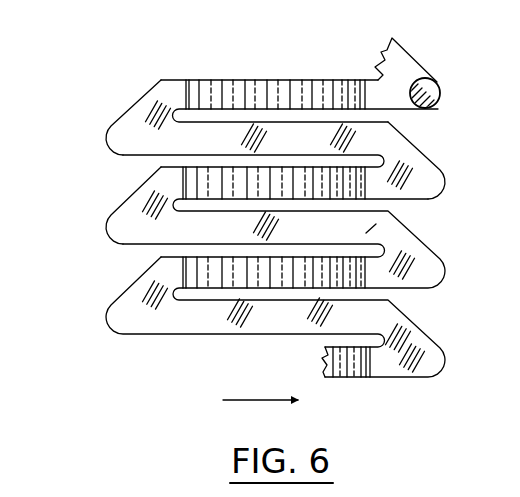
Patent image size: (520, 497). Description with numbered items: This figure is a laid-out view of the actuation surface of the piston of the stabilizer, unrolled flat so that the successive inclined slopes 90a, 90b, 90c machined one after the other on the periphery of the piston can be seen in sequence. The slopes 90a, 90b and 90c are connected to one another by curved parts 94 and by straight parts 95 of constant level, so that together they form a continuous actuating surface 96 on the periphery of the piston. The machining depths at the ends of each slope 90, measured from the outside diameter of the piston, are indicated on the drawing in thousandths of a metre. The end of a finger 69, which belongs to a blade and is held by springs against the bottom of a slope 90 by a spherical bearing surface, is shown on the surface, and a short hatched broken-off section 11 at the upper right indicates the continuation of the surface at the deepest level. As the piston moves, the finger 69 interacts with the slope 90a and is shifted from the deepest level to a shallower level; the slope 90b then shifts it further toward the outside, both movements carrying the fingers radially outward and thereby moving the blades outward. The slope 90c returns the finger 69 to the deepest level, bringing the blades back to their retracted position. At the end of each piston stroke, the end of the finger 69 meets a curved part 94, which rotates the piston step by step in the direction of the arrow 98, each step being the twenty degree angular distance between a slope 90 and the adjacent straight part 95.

The strip end portion 11 is at (382, 97).
The finger 69 is at (438, 80).
The slope 90 is at (226, 140).
The first inclined slope 90a is at (275, 65).
The second inclined slope 90b is at (277, 173).
The third inclined slope 90c is at (287, 256).
The curved part 94 is at (137, 115).
The straight part 95 is at (197, 227).
The actuating surface 96 is at (254, 78).
The arrow 98 is at (260, 387).